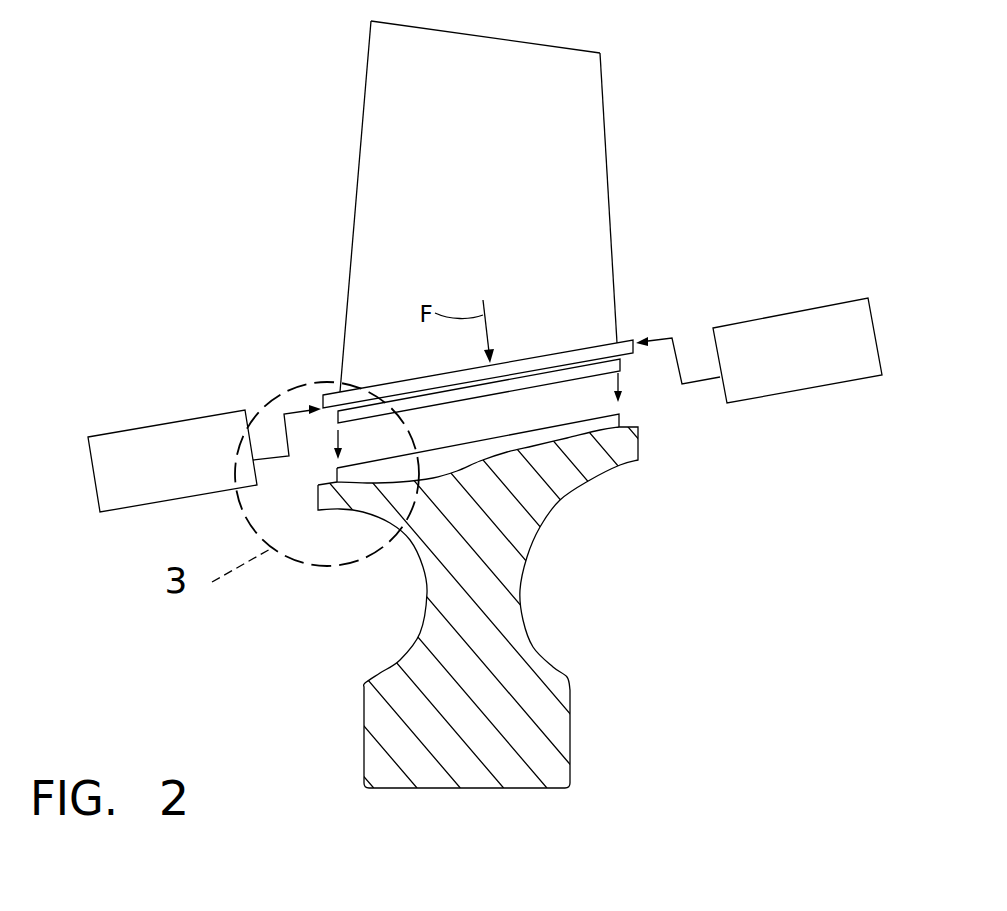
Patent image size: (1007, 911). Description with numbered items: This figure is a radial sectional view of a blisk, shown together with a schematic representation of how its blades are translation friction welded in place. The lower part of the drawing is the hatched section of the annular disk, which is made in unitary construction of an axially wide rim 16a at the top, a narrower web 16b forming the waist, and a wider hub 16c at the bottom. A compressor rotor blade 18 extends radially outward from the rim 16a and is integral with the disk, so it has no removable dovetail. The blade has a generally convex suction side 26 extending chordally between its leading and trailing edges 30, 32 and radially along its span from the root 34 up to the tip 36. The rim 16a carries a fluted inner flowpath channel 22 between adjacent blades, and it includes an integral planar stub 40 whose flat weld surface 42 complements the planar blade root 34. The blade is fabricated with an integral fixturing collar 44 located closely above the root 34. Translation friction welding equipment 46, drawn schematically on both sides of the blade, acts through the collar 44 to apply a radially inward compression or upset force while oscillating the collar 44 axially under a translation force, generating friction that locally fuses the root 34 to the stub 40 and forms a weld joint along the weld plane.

The compressor rotor blade 18 is at (612, 93).
The leading edge 30 is at (360, 149).
The trailing edge 32 is at (607, 138).
The tip 36 is at (535, 42).
The suction side 26 is at (505, 236).
The fixturing collar 44 is at (600, 333).
The root 34 is at (540, 385).
The inner flowpath channel 22 is at (426, 472).
The planar stub 40 is at (621, 414).
The planar weld surface 42 is at (483, 437).
The rim 16a is at (640, 435).
The web 16b is at (522, 582).
The hub 16c is at (572, 733).
The translation friction welding equipment 46 is at (180, 418).